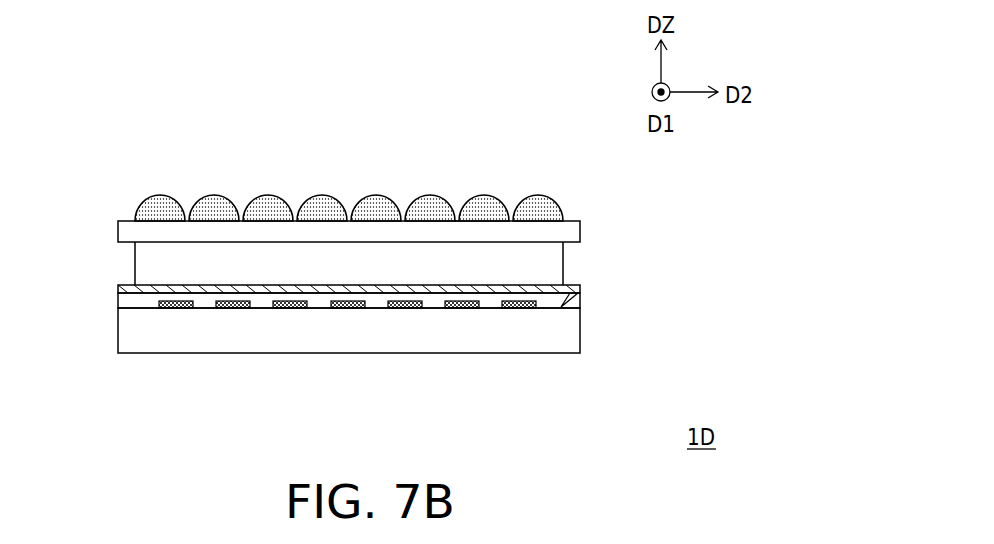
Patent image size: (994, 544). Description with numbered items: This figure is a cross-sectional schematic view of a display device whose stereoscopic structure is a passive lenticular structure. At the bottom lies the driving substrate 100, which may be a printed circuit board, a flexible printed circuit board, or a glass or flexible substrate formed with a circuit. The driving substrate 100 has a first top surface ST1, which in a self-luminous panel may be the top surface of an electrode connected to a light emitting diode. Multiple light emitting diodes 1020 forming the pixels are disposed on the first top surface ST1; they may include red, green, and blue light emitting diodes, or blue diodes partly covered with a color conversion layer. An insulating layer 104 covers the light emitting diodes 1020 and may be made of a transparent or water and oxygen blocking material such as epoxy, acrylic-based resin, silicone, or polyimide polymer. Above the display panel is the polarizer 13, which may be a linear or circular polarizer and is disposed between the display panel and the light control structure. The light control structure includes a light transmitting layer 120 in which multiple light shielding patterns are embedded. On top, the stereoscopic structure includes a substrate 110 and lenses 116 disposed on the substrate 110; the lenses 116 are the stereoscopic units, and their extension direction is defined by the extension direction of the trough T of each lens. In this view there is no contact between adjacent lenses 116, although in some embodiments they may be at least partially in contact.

The substrate 110 is at (570, 233).
The lenses 116 is at (531, 205).
The trough T is at (457, 219).
The light transmitting layer 120 is at (143, 264).
The insulating layer 104 is at (576, 288).
The first top surface ST1 is at (565, 305).
The polarizer 13 is at (119, 290).
The light emitting diodes 1020 is at (515, 309).
The driving substrate 100 is at (566, 340).